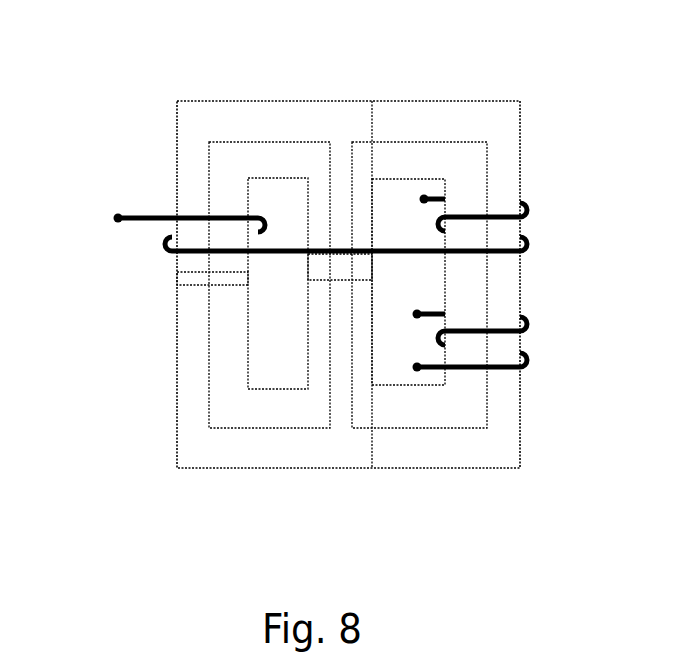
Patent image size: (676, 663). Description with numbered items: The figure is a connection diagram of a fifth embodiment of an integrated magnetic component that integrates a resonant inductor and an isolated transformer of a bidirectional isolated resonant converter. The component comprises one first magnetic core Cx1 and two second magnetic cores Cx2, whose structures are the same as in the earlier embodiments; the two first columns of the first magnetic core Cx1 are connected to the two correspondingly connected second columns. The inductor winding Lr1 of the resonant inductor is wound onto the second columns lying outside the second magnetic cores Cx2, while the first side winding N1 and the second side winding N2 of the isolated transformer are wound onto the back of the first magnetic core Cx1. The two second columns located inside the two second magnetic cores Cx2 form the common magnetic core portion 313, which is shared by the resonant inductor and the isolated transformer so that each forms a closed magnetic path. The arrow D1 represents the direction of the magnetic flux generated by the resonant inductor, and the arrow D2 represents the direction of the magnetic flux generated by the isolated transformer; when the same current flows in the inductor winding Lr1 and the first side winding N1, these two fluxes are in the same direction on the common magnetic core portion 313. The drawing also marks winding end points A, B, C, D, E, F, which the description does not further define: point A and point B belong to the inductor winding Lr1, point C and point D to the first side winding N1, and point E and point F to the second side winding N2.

The common magnetic core portion 313 is at (308, 258).
The first magnetic core Cx1 is at (452, 490).
The second magnetic core Cx2 is at (225, 77).
The arrow representing direction of magnetic flux generated by the resonant inductor D1 is at (330, 300).
The arrow representing direction of magnetic flux generated by the isolated transfor D2 is at (352, 300).
The inductor winding Lr1 is at (98, 207).
The first side winding N1 is at (537, 185).
The second side winding N2 is at (537, 305).
The terminal A is at (121, 203).
The node B is at (227, 275).
The node C is at (370, 269).
The terminal D is at (412, 206).
The terminal E is at (407, 314).
The terminal F is at (407, 367).